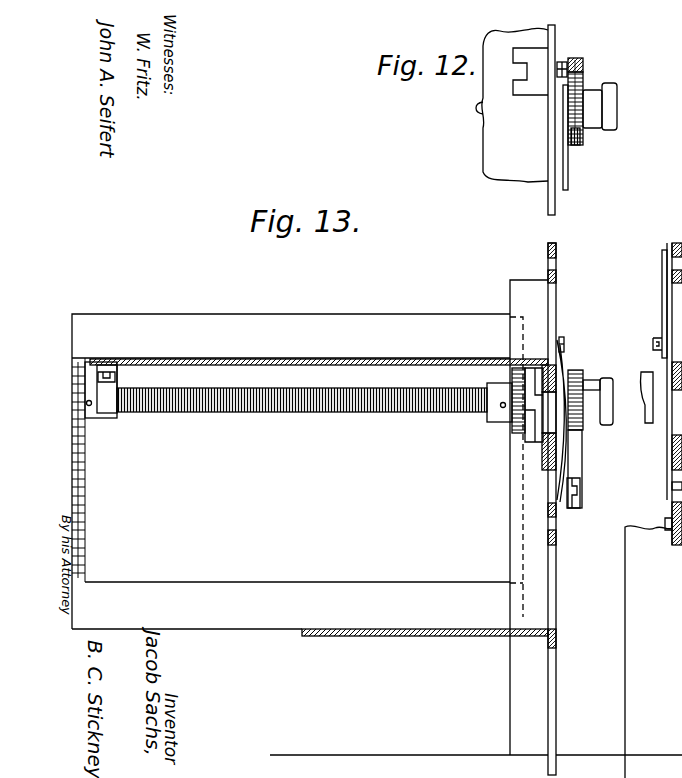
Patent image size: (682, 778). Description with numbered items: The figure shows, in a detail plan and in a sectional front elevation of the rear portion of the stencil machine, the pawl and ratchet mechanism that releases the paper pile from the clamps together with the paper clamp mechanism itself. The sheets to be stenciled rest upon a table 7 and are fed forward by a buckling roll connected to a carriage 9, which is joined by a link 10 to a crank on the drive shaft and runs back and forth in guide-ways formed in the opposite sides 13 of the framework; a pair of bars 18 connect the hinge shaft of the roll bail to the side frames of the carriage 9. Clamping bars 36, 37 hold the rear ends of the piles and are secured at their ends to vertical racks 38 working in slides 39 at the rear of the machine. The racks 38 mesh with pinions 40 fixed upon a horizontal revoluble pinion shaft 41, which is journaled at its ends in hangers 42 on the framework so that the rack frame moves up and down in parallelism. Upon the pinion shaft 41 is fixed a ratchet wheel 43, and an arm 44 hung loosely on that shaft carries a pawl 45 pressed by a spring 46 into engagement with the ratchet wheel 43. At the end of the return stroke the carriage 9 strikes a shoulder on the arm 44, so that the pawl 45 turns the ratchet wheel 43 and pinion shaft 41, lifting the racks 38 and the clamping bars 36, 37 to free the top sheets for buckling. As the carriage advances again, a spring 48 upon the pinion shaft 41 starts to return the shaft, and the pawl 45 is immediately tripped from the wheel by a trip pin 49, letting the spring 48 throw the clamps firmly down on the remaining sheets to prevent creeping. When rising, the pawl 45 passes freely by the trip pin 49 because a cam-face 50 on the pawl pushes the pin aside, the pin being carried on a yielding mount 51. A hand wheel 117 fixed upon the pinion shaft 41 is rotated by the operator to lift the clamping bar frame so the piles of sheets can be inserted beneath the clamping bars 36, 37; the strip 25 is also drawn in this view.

In FIG. 12, the table 7 is at (515, 105).
In FIG. 13, the table 7 is at (334, 360).
In FIG. 13, the carriage 9 is at (668, 430).
In FIG. 13, the link 10 is at (642, 404).
In FIG. 12, the framework side 13 is at (556, 205).
In FIG. 13, the framework side 13 is at (557, 279).
In FIG. 13, the bar 18 is at (662, 303).
In FIG. 13, the bottom strip 25 is at (373, 636).
In FIG. 13, the clamping bar 36 is at (291, 471).
In FIG. 13, the clamping bar 37 is at (291, 605).
In FIG. 13, the vertical rack 38 is at (86, 493).
In FIG. 12, the slide 39 is at (519, 75).
In FIG. 13, the slide 39 is at (529, 517).
In FIG. 13, the pinion 40 is at (93, 418).
In FIG. 12, the pinion shaft 41 is at (478, 109).
In FIG. 13, the pinion shaft 41 is at (538, 405).
In FIG. 13, the hanger 42 is at (116, 378).
In FIG. 12, the ratchet wheel 43 is at (590, 86).
In FIG. 13, the ratchet wheel 43 is at (588, 378).
In FIG. 12, the arm 44 is at (569, 175).
In FIG. 13, the arm 44 is at (561, 503).
In FIG. 12, the pawl 45 is at (572, 60).
In FIG. 13, the pawl 45 is at (583, 447).
In FIG. 13, the spring 46 is at (581, 490).
In FIG. 13, the spring 48 is at (352, 413).
In FIG. 12, the trip pin 49 is at (584, 80).
In FIG. 13, the trip pin 49 is at (584, 380).
In FIG. 12, the cam-face 50 is at (571, 64).
In FIG. 12, the yielding mount 51 is at (558, 62).
In FIG. 13, the yielding mount 51 is at (564, 345).
In FIG. 12, the hand wheel 117 is at (612, 107).
In FIG. 13, the hand wheel 117 is at (605, 390).